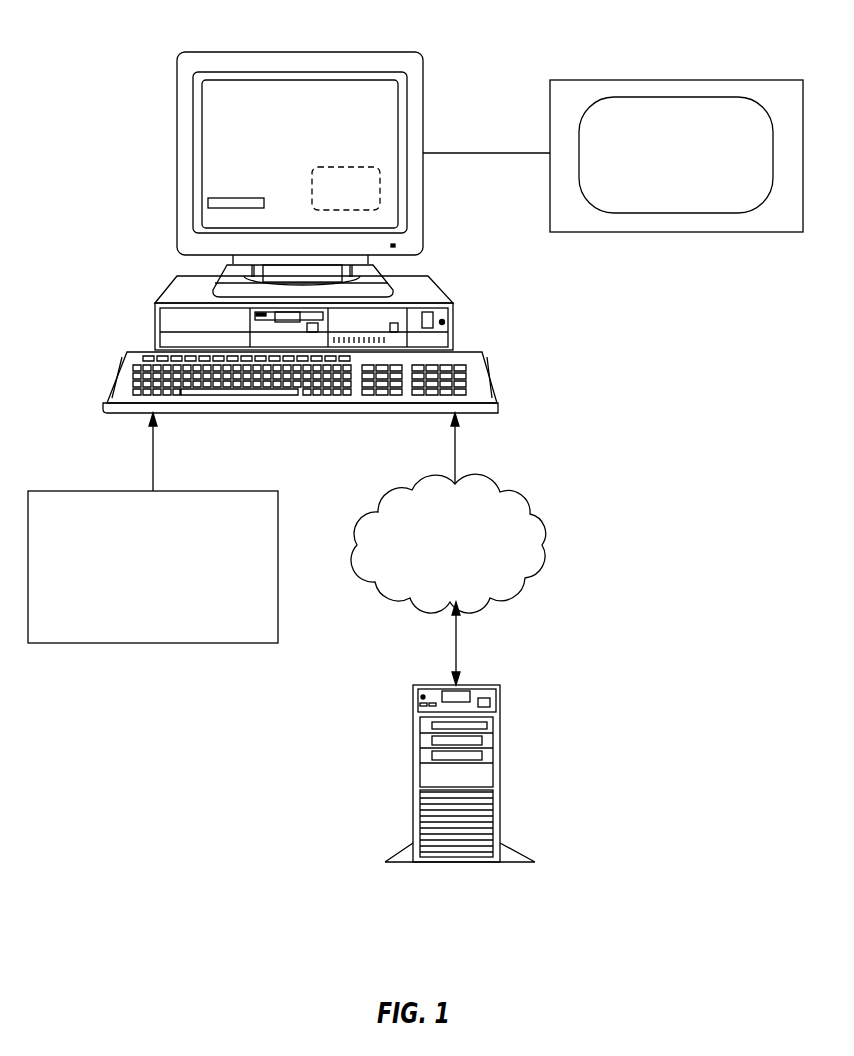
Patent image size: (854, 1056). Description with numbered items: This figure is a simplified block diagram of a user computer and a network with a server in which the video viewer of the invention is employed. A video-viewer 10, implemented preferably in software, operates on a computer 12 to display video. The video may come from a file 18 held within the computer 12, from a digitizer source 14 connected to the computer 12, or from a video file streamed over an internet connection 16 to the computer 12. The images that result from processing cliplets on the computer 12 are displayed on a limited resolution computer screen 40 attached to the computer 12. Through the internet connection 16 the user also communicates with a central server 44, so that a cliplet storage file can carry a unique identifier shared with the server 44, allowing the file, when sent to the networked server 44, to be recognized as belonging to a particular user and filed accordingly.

The video-viewer 10 is at (370, 188).
The computer 12 is at (215, 52).
The digitizer source 14 is at (68, 491).
The internet connection 16 is at (520, 503).
The file 18 is at (217, 197).
The computer screen 40 is at (760, 78).
The central server 44 is at (493, 687).